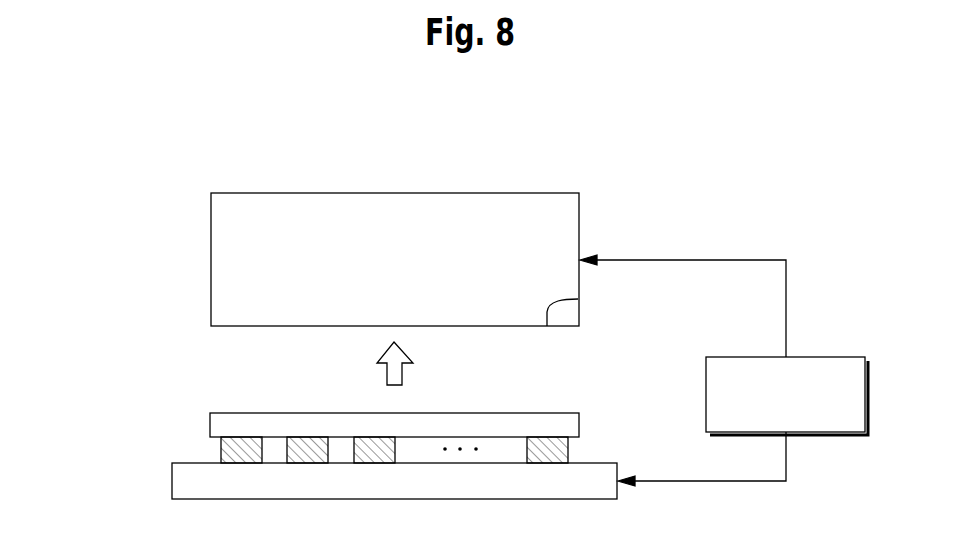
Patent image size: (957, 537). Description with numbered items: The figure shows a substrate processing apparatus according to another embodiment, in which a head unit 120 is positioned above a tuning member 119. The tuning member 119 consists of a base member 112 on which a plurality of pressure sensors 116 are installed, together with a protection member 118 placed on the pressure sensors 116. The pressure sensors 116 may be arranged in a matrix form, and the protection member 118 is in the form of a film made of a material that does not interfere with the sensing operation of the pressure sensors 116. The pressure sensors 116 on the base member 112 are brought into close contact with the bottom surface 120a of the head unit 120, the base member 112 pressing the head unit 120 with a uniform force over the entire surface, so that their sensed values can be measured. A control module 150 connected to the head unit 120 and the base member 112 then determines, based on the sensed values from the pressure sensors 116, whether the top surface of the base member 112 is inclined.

The head unit 120 is at (273, 193).
The bottom surface 120a is at (578, 299).
The control module 150 is at (837, 356).
The tuning member 119 is at (95, 408).
The protection member 118 is at (230, 423).
The pressure sensors 116 is at (230, 449).
The base member 112 is at (181, 487).